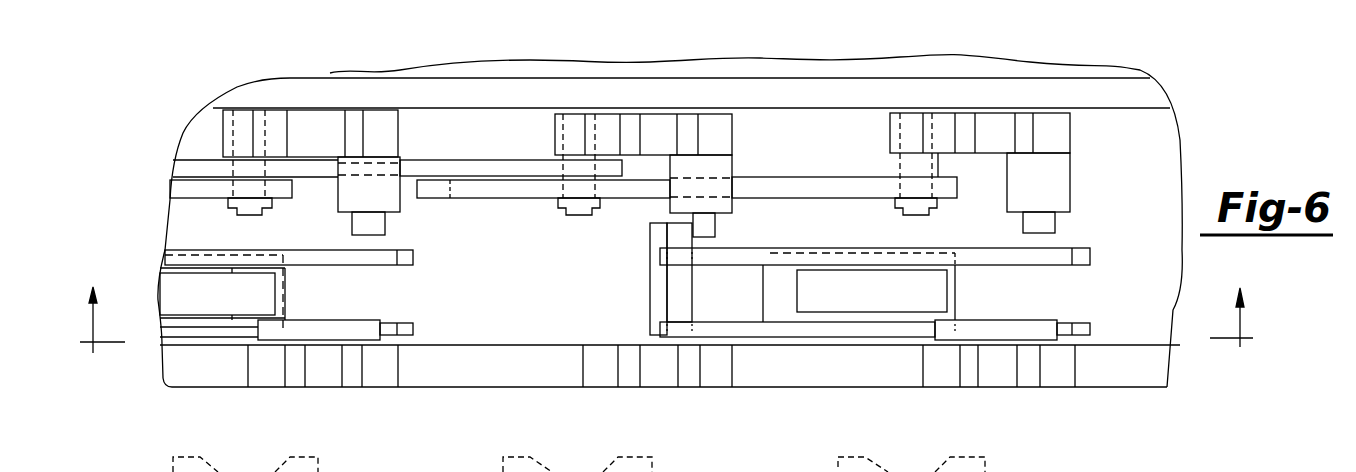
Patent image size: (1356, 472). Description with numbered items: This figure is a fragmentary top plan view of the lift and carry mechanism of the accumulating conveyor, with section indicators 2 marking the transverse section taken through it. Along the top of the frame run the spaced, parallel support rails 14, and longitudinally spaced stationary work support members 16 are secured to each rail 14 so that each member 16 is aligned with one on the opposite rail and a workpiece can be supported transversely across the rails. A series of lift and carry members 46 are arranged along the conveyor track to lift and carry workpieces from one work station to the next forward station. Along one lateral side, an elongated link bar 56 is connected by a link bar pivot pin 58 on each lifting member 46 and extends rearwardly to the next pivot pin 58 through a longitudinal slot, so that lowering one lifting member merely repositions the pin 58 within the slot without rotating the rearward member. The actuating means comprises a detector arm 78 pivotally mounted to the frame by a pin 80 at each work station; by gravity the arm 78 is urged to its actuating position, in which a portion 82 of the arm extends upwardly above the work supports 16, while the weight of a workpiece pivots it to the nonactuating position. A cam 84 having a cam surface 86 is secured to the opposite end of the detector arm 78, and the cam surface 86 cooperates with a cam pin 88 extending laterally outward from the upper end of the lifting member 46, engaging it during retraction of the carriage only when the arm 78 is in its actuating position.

The section line 2- 2 is at (678, 297).
The support rail 14 is at (465, 345).
The work support member 16 is at (325, 375).
The lift and carry member 46 is at (372, 122).
The link bar 56 is at (460, 168).
The link bar pivot pin 58 is at (910, 207).
The detector arm 78 is at (392, 325).
The pin 80 is at (910, 318).
The portion of the detector arm 82 is at (353, 285).
The cam 84 is at (666, 291).
The cam surface 86 is at (683, 295).
The cam pin 88 is at (400, 210).